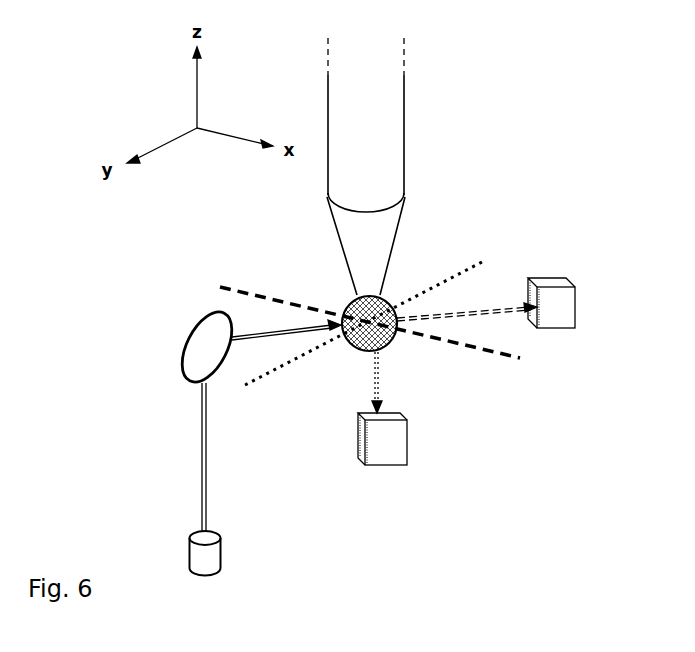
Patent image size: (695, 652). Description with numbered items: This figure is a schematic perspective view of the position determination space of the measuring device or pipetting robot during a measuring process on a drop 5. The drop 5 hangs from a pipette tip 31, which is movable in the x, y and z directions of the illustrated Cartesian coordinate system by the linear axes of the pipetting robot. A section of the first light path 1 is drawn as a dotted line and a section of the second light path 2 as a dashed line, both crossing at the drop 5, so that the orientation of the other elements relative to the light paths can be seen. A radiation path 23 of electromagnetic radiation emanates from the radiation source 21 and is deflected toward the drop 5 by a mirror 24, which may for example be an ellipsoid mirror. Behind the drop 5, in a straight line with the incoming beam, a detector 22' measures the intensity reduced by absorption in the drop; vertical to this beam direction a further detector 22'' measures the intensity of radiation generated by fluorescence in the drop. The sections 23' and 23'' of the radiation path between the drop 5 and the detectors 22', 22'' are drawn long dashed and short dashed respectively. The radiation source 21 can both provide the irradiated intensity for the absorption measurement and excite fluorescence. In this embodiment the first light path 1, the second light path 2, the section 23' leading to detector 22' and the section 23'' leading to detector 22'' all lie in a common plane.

The first light path 1 is at (470, 262).
The second light path 2 is at (241, 291).
The drop 5 is at (350, 305).
The radiation source 21 is at (222, 551).
The detector 22' is at (579, 303).
The detector 22'' is at (397, 459).
The radiation path 23 is at (182, 457).
The section of radiation path 23' is at (481, 272).
The section of radiation path 23'' is at (414, 382).
The mirror 24 is at (191, 357).
The pipette tip 31 is at (389, 163).